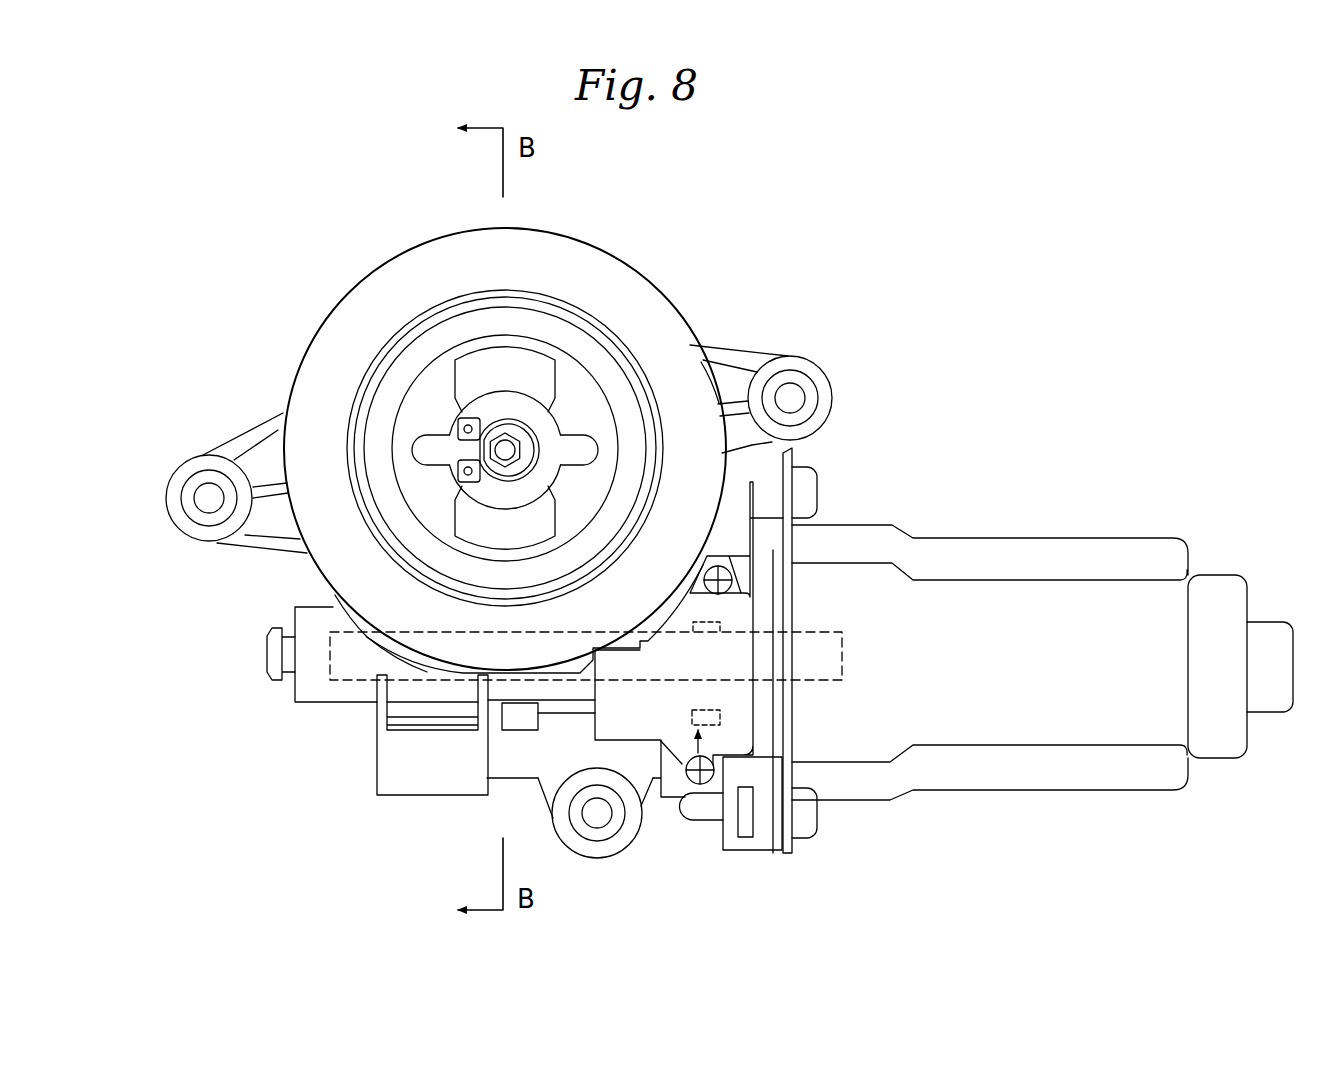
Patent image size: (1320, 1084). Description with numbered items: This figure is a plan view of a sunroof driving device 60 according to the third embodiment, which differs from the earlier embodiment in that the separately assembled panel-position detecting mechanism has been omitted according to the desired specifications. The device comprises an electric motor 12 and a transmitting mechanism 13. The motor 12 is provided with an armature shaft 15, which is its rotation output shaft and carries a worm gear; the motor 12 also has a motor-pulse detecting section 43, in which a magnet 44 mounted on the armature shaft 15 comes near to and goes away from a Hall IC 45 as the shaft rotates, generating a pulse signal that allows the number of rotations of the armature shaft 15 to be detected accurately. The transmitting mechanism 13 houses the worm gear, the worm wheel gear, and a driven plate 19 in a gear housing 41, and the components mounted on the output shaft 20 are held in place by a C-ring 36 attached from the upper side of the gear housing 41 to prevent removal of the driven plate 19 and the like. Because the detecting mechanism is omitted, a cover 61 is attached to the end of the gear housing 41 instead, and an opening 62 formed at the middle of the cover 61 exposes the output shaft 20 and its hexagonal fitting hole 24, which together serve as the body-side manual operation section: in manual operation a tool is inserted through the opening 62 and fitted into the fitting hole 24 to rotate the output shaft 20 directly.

The electric motor 12 is at (1060, 592).
The transmitting mechanism 13 is at (330, 390).
The armature shaft 15 is at (622, 667).
The driven plate 19 is at (477, 362).
The output shaft 20 is at (492, 468).
The fitting hole 24 is at (510, 450).
The C-ring 36 is at (458, 425).
The gear housing 41 is at (733, 352).
The motor-pulse detecting section 43 is at (687, 778).
The magnet 44 is at (712, 622).
The Hall IC 45 is at (720, 716).
The driving device 60 is at (630, 252).
The cover 61 is at (540, 247).
The opening 62 is at (543, 532).